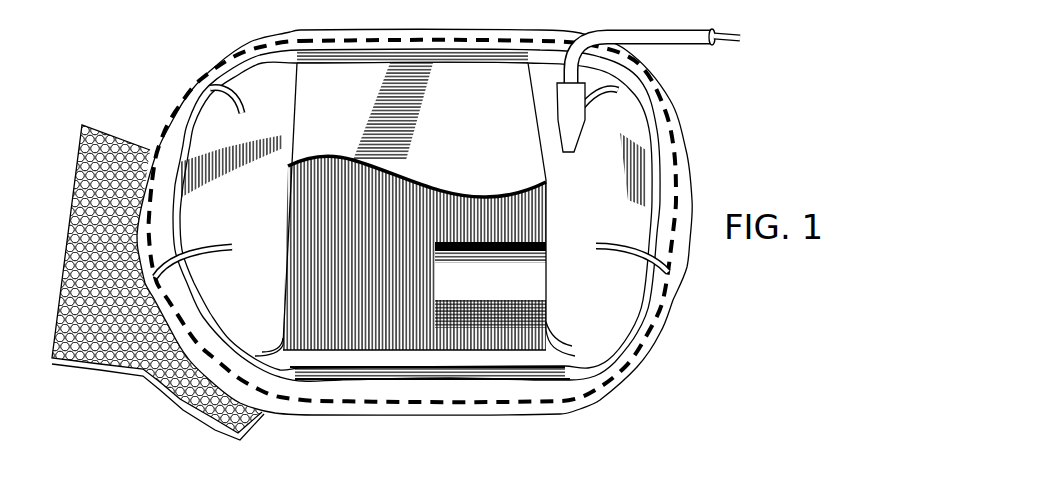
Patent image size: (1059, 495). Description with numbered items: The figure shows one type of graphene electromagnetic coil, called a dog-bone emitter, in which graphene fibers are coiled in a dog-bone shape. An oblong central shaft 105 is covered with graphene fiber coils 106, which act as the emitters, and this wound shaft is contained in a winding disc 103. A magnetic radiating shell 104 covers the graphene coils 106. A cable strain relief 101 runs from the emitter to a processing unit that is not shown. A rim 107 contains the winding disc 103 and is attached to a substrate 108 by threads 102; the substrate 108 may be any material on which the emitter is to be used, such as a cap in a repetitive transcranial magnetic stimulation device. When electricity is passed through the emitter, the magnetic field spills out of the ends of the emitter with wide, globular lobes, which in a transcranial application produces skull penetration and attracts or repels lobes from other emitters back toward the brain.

The cable strain relief 101 is at (645, 45).
The threads 102 is at (668, 258).
The winding disc 103 is at (612, 204).
The magnetic radiating shell 104 is at (512, 142).
The oblong central shaft 105 is at (487, 287).
The graphene fiber coils 106 is at (387, 343).
The rim 107 is at (318, 372).
The substrate 108 is at (125, 338).